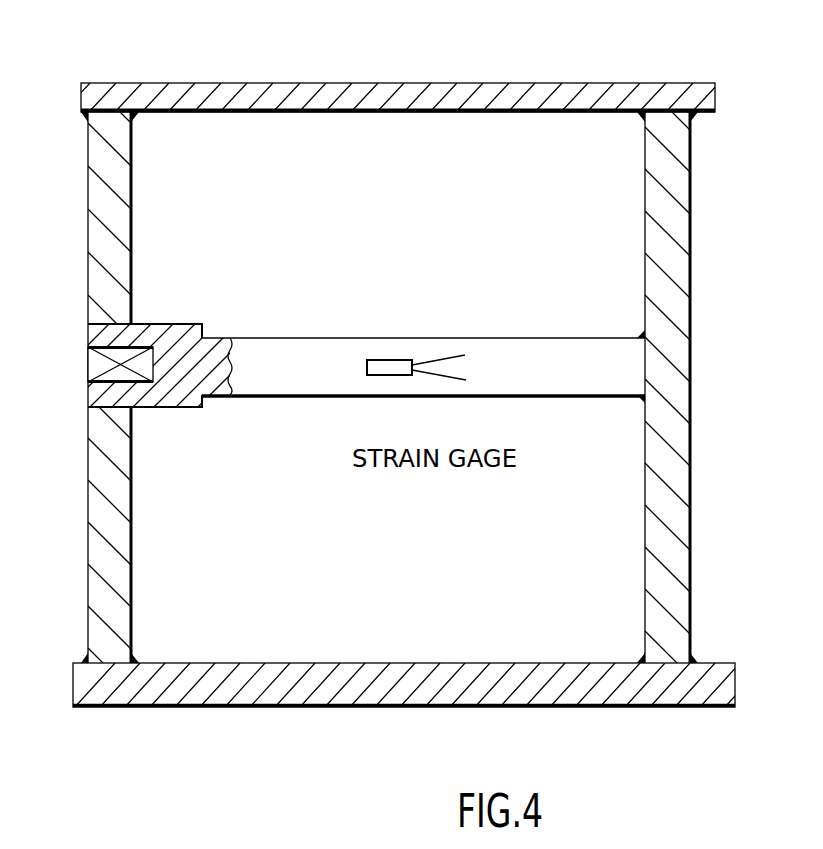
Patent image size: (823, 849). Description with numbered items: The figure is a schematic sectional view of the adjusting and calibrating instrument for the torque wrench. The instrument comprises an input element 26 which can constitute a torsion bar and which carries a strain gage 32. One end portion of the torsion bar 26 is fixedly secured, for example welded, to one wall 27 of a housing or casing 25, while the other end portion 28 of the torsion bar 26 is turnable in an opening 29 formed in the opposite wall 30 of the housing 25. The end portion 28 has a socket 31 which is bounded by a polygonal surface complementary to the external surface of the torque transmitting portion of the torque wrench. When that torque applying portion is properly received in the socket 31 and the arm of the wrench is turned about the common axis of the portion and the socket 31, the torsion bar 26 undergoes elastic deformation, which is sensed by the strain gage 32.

The housing 25 is at (513, 83).
The input element 26 is at (538, 350).
The wall 27 is at (678, 268).
The end portion 28 is at (178, 350).
The opening 29 is at (102, 408).
The opposite wall 30 is at (105, 252).
The socket 31 is at (103, 366).
The strain gage 32 is at (385, 362).